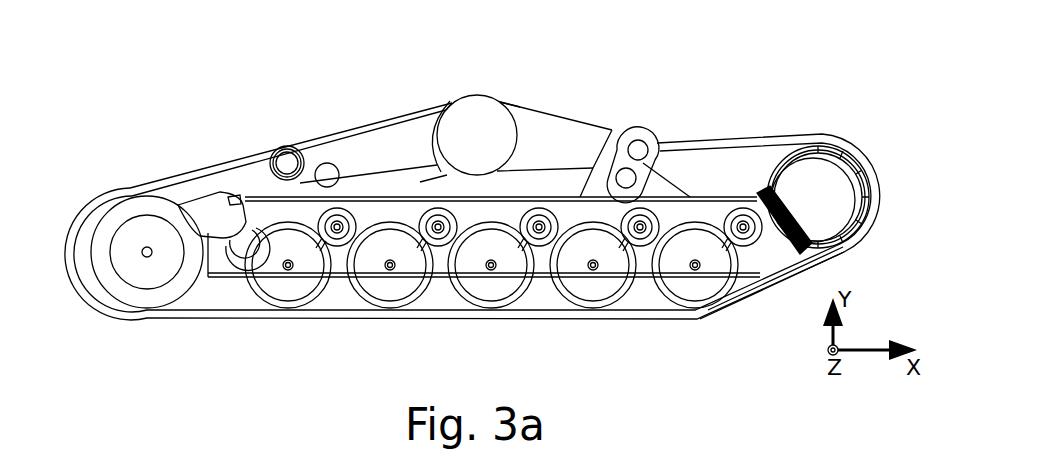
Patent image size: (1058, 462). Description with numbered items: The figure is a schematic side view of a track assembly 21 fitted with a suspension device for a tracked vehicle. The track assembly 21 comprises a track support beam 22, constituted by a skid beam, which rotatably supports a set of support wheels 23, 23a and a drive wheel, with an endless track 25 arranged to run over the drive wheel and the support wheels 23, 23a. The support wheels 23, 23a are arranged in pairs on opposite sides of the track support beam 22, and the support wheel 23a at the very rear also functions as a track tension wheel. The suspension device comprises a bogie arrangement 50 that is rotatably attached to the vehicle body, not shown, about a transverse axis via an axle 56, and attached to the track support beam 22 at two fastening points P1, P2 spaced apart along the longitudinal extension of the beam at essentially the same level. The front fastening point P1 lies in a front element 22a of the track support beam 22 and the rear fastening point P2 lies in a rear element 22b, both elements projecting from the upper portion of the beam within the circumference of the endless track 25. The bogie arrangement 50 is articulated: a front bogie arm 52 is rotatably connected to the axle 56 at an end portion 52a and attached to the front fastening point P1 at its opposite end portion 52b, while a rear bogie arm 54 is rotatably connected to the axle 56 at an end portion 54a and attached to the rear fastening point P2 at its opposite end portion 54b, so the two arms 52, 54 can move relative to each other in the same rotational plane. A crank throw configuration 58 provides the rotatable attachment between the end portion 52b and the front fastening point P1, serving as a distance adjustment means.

The track assembly 21 is at (140, 182).
The track support beam 22 is at (713, 185).
The front element 22a is at (684, 172).
The rear element 22b is at (276, 182).
The support wheels 23 is at (323, 292).
The support wheel 23a is at (180, 292).
The endless track 25 is at (788, 285).
The bogie arrangement 50 is at (457, 94).
The front bogie arm 52 is at (555, 106).
The end portion 52a is at (517, 105).
The opposite end portion 52b is at (612, 128).
The rear bogie arm 54 is at (372, 131).
The end portion 54a is at (436, 117).
The opposite end portion 54b is at (300, 150).
The axle 56 is at (448, 102).
The crank throw configuration 58 is at (638, 122).
The front fastening point P1 is at (626, 176).
The rear fastening point P2 is at (323, 172).